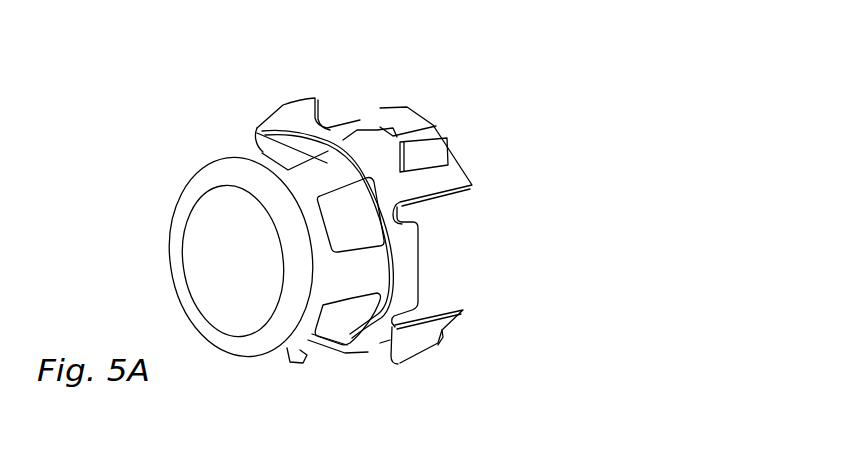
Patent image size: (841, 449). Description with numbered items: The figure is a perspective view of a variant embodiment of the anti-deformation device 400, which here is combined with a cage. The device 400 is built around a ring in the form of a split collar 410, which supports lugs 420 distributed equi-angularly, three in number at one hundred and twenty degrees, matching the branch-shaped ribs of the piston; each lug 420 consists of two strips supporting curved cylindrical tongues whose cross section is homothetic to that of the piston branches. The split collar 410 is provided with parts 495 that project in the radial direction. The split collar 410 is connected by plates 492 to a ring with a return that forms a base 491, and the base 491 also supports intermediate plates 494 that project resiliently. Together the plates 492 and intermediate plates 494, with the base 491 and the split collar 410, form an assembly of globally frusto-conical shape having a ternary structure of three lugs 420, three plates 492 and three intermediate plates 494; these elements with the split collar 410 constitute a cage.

The anti-deformation device 400 is at (403, 77).
The ring in the form of a split collar 410 is at (400, 220).
The lug 420 is at (440, 90).
The base 491 is at (294, 249).
The plate 492 is at (330, 290).
The intermediate plate 494 is at (255, 129).
The projecting part 495 is at (292, 118).